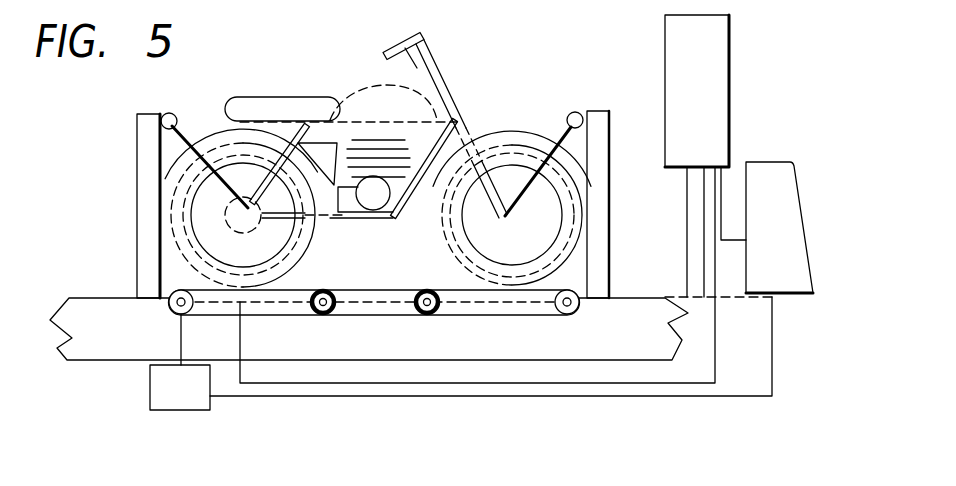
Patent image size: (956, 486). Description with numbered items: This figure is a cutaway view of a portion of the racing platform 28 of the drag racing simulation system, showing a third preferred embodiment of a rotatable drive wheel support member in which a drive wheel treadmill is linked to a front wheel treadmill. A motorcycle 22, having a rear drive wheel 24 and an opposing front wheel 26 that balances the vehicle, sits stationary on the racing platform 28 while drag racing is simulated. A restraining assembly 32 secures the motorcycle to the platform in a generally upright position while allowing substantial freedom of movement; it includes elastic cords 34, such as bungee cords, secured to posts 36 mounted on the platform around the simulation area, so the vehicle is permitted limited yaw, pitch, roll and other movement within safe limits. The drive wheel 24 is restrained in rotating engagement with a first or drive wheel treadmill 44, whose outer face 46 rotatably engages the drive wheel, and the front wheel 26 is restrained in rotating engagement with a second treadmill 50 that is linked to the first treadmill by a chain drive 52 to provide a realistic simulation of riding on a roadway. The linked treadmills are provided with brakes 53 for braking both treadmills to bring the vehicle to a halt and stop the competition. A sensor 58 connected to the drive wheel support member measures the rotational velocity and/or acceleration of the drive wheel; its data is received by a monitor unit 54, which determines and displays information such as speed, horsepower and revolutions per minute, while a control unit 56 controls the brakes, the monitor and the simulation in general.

The motorcycle 22 is at (318, 91).
The drive wheel 24 is at (230, 154).
The front wheel 26 is at (512, 163).
The racing platform 28 is at (95, 361).
The restraining assembly 32 is at (150, 104).
The elastic cords 34 is at (164, 128).
The posts 36 is at (137, 212).
The drive wheel treadmill 44 is at (276, 320).
The outer face 46 is at (302, 290).
The second treadmill 50 is at (534, 320).
The chain drive 52 is at (393, 291).
The brakes 53 is at (172, 293).
The monitor unit 54 is at (778, 162).
The control unit 56 is at (729, 46).
The sensor 58 is at (155, 410).